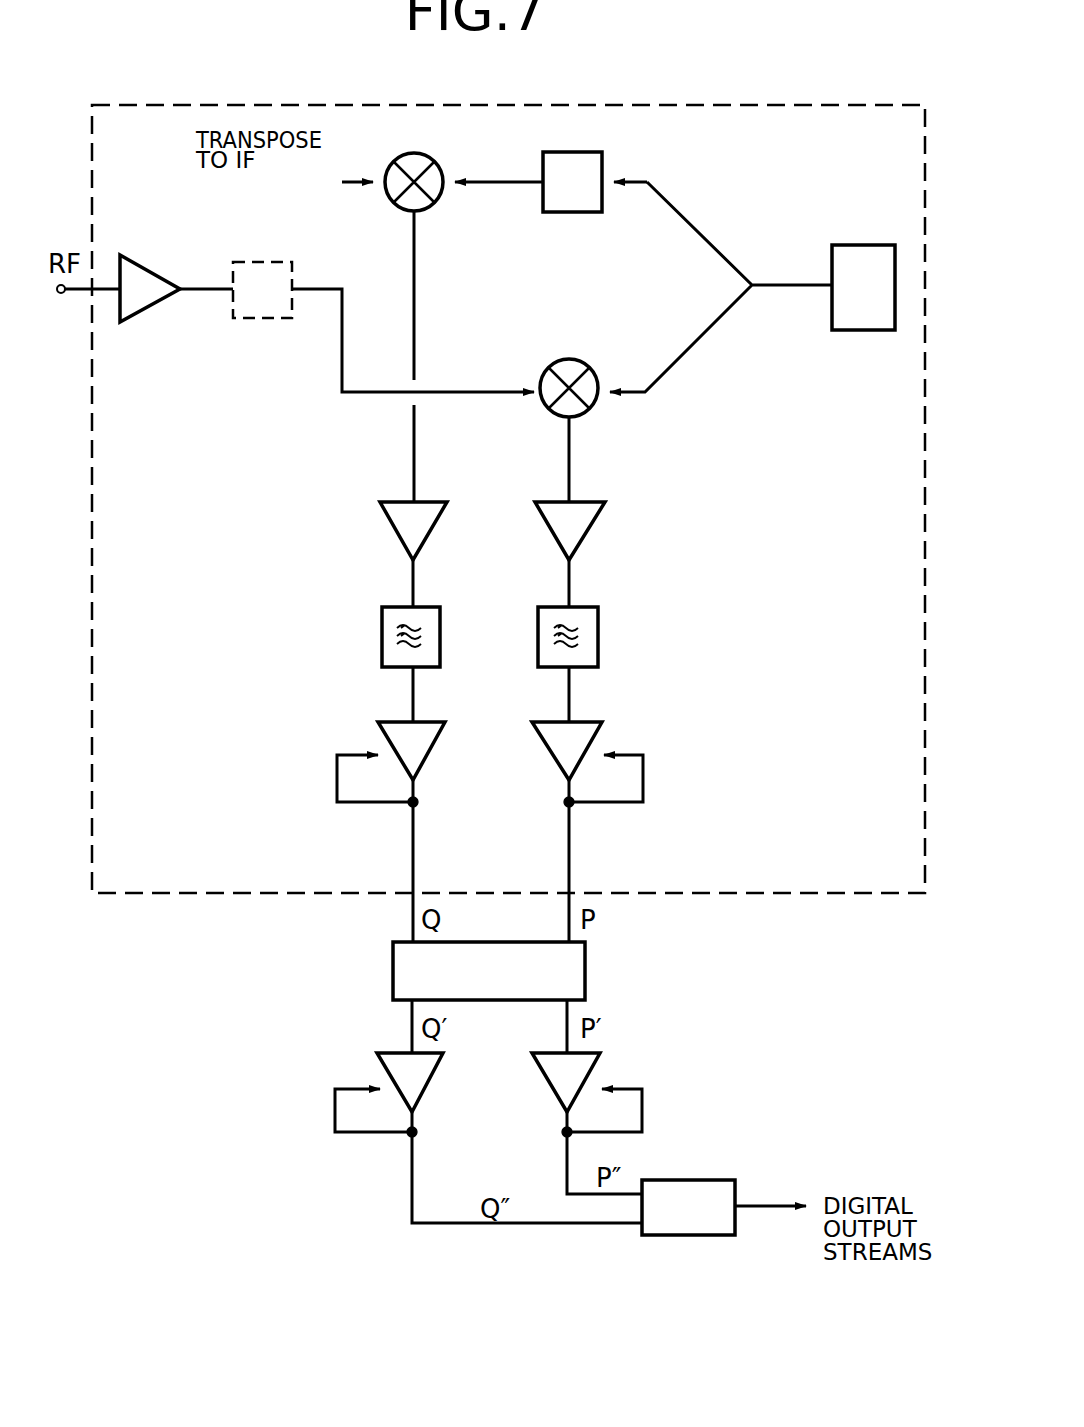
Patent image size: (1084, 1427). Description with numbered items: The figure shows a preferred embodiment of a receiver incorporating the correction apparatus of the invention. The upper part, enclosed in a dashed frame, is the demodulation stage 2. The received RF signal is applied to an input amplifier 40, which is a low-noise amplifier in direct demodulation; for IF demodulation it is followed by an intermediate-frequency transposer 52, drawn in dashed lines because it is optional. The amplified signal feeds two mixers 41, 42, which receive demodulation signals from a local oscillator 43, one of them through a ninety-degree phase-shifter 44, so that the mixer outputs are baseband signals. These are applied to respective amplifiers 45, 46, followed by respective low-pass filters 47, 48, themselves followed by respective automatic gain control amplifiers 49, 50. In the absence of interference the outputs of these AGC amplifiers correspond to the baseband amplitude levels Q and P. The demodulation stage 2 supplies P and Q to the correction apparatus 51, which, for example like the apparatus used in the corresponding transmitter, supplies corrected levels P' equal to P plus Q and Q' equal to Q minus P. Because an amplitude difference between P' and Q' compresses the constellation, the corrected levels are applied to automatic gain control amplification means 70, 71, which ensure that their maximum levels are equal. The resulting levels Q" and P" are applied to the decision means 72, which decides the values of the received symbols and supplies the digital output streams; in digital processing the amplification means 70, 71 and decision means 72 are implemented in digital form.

The demodulation stage 2 is at (176, 105).
The low-noise amplifier 40 is at (165, 255).
The mixer 41 is at (397, 165).
The mixer 42 is at (592, 405).
The local oscillator 43 is at (832, 265).
The 90° phase-shifter 44 is at (594, 151).
The amplifier 45 is at (395, 542).
The amplifier 46 is at (590, 536).
The low-pass filter 47 is at (382, 632).
The low-pass filter 48 is at (598, 630).
The automatic gain control amplifier 49 is at (382, 733).
The automatic gain control amplifier 50 is at (600, 716).
The correction apparatus 51 is at (585, 958).
The intermediate-frequency transposer 52 is at (263, 318).
The automatic gain control amplification means 70 is at (391, 1066).
The automatic gain control amplification means 71 is at (590, 1068).
The decision means 72 is at (705, 1180).